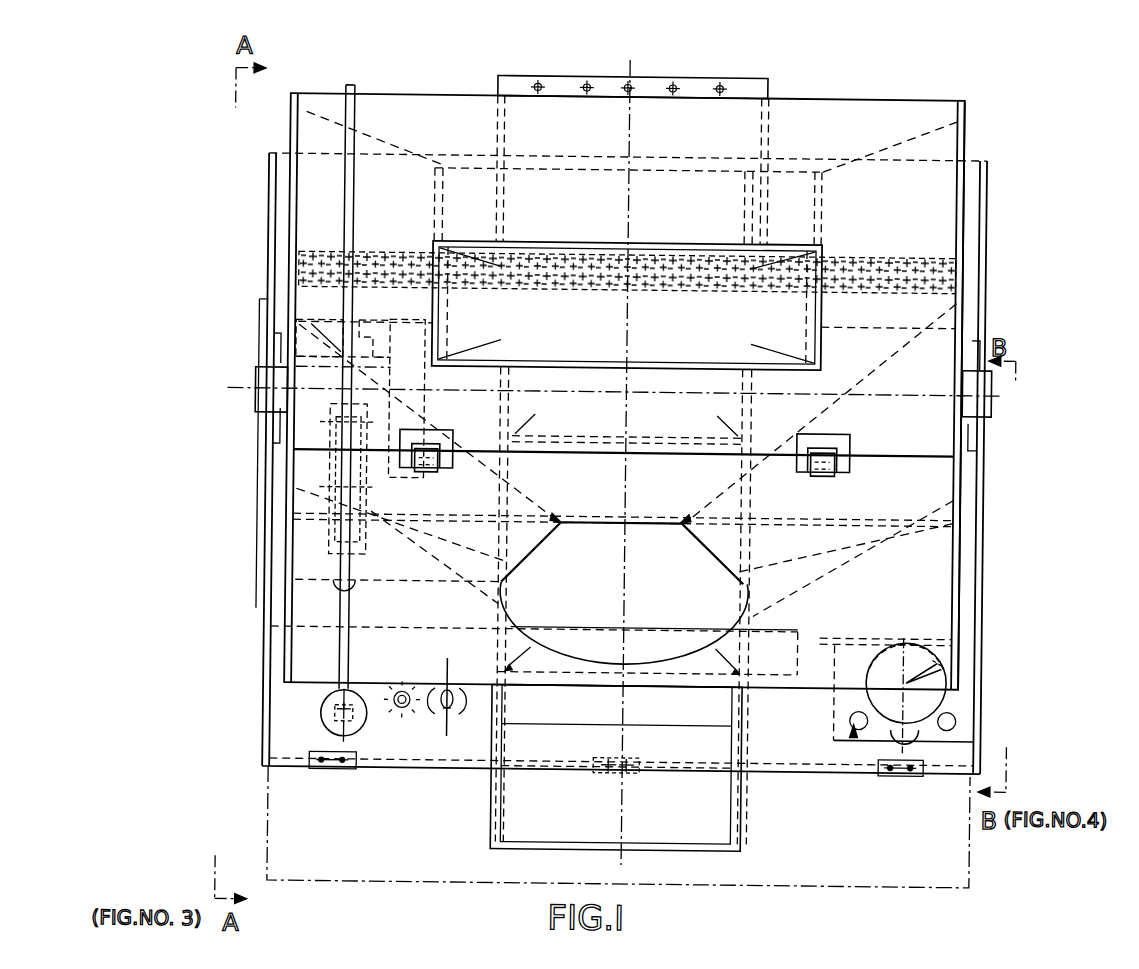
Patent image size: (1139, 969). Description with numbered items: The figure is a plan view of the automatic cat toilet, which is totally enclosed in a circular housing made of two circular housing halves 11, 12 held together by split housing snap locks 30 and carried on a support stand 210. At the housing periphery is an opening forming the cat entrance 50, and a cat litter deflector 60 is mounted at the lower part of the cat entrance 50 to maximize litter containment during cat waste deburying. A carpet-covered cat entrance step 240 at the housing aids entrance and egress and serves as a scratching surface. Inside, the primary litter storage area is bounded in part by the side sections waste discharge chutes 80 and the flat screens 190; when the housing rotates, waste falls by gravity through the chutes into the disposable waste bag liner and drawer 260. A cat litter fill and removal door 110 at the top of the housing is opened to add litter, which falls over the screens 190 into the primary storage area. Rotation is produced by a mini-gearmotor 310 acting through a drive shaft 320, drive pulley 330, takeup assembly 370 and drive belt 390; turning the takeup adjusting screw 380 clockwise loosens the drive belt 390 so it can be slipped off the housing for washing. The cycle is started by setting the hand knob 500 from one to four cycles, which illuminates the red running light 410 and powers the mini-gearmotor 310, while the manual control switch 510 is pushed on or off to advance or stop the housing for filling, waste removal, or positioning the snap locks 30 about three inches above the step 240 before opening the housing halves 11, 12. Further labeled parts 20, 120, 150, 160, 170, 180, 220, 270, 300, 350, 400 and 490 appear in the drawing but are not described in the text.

The circular housing half 11 is at (962, 470).
The circular housing half 12 is at (965, 120).
The axle 20 is at (255, 390).
The split housing snap locks 30 is at (440, 432).
The cat entrance 50 is at (720, 555).
The cat litter deflector 60 is at (543, 630).
The side sections waste discharge chutes 80 is at (535, 510).
The cat litter fill and removal door 110 is at (760, 350).
The cross brace 120 is at (330, 128).
The top plate 150 is at (764, 80).
The channel member 160 is at (790, 118).
The mounting holes 170 is at (710, 73).
The support member 180 is at (496, 160).
The flat screens 190 is at (380, 262).
The support stand 210 is at (985, 540).
The bottom plate 220 is at (970, 840).
The cat entrance step 240 is at (745, 800).
The disposable waste bag liner and drawer 260 is at (740, 172).
The drive shaft 270 is at (728, 468).
The guide 300 is at (277, 467).
The mini-gearmotor 310 is at (388, 330).
The drive shaft 320 is at (312, 357).
The drive pulley 330 is at (300, 330).
The link 350 is at (253, 562).
The takeup assembly 370 is at (327, 487).
The takeup adjusting screw 380 is at (340, 718).
The drive belt 390 is at (346, 88).
The knob 400 is at (325, 712).
The red running light 410 is at (405, 712).
The control panel 490 is at (950, 737).
The hand knob 500 is at (950, 688).
The manual control switch 510 is at (452, 682).